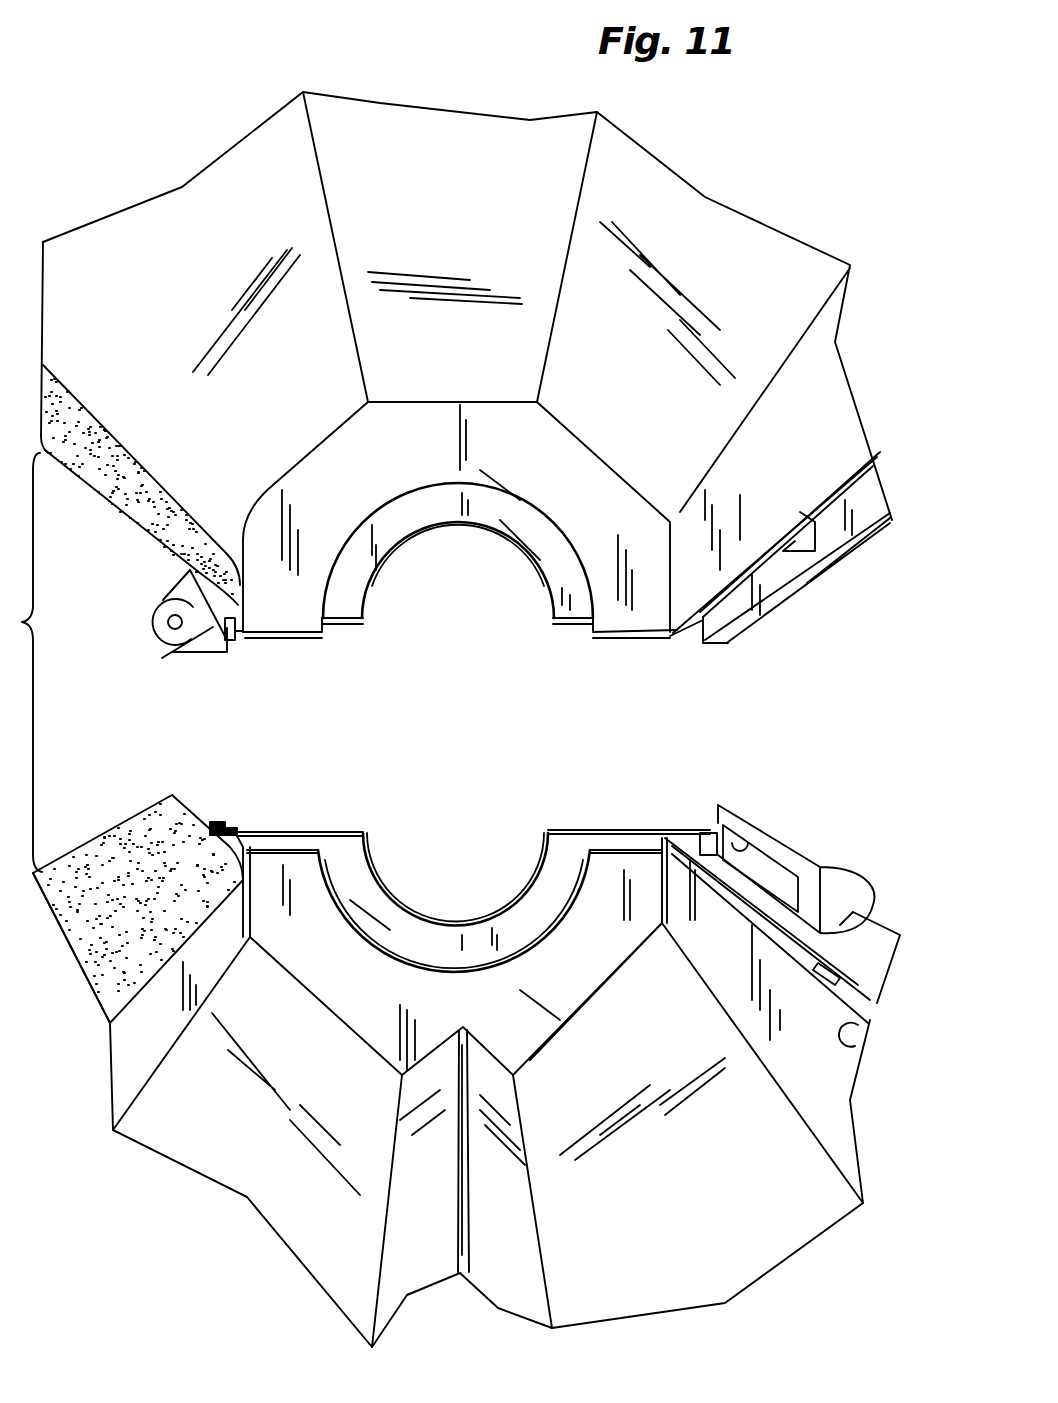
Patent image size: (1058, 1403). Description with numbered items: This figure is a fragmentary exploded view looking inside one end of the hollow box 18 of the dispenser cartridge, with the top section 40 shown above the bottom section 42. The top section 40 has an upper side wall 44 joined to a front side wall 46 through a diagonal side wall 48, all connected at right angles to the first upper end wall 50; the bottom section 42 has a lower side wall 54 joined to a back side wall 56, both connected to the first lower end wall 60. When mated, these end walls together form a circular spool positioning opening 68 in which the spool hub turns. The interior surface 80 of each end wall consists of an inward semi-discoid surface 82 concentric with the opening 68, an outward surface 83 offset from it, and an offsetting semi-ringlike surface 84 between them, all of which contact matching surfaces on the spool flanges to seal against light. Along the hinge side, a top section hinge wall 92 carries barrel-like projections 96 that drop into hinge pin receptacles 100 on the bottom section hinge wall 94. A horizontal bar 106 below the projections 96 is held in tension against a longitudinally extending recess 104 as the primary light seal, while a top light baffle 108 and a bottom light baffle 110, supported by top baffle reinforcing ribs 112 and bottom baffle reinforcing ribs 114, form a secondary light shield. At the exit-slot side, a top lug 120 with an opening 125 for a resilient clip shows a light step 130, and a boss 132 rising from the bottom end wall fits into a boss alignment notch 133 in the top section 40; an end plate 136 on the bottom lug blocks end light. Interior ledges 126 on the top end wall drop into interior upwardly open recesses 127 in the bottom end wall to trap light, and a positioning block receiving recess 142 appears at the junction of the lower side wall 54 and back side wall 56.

The hollow box 18 is at (82, 240).
The top section 40 is at (142, 237).
The bottom section 42 is at (100, 957).
The upper side wall 44 is at (740, 232).
The front side wall 46 is at (225, 172).
The diagonal side wall 48 is at (413, 113).
The first upper end wall 50 is at (417, 415).
The lower side wall 54 is at (273, 1175).
The back side wall 56 is at (660, 1297).
The first lower end wall 60 is at (607, 865).
The spool positioning opening 68 is at (450, 525).
The interior surface 80 is at (590, 460).
The inward semi-discoid surface 82 is at (538, 530).
The outward surface 83 is at (490, 472).
The offsetting semi-ringlike surface 84 is at (423, 485).
The top section hinge wall 92 is at (863, 488).
The bottom section hinge wall 94 is at (870, 1000).
The barrel-like projections 96 is at (833, 565).
The hinge pin receptacles 100 is at (743, 813).
The longitudinally extending recess 104 is at (742, 888).
The horizontal bar 106 is at (712, 640).
The top light baffle 108 is at (860, 458).
The bottom light baffle 110 is at (860, 1040).
The top baffle reinforcing ribs 112 is at (803, 533).
The bottom baffle reinforcing ribs 114 is at (847, 972).
The top lugs 120 is at (163, 600).
The openings 125 is at (167, 623).
The interior ledges 126 is at (292, 627).
The interior upwardly open recesses 127 is at (287, 840).
The light step 130 is at (177, 653).
The boss 132 is at (253, 832).
The boss alignment notch 133 is at (230, 643).
The end plate 136 is at (223, 820).
The positioning block receiving recess 142 is at (437, 1297).